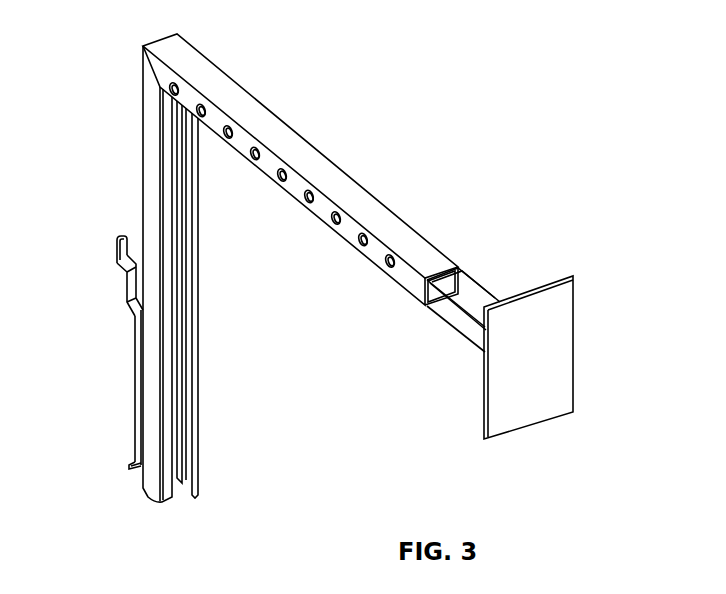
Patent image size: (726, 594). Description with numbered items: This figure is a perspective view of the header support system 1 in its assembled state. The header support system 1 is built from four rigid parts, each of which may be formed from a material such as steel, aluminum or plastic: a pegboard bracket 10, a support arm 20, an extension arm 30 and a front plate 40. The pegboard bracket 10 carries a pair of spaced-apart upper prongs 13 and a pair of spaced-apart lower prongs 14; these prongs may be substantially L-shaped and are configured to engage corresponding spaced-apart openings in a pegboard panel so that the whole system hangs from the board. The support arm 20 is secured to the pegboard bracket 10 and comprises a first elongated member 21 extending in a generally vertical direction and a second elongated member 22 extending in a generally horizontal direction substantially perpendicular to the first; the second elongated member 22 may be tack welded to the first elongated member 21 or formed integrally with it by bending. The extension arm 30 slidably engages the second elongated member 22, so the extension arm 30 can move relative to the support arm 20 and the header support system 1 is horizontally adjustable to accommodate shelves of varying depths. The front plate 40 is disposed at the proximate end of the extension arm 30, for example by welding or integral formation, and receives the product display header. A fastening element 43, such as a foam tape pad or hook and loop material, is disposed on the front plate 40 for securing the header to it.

The header support system 1 is at (446, 66).
The pegboard bracket 10 is at (106, 316).
The upper prongs 13 is at (120, 235).
The lower prongs 14 is at (128, 465).
The support arm 20 is at (106, 84).
The first elongated member 21 is at (198, 308).
The second elongated member 22 is at (240, 85).
The extension arm 30 is at (481, 292).
The front plate 40 is at (545, 283).
The fastening element 43 is at (560, 375).